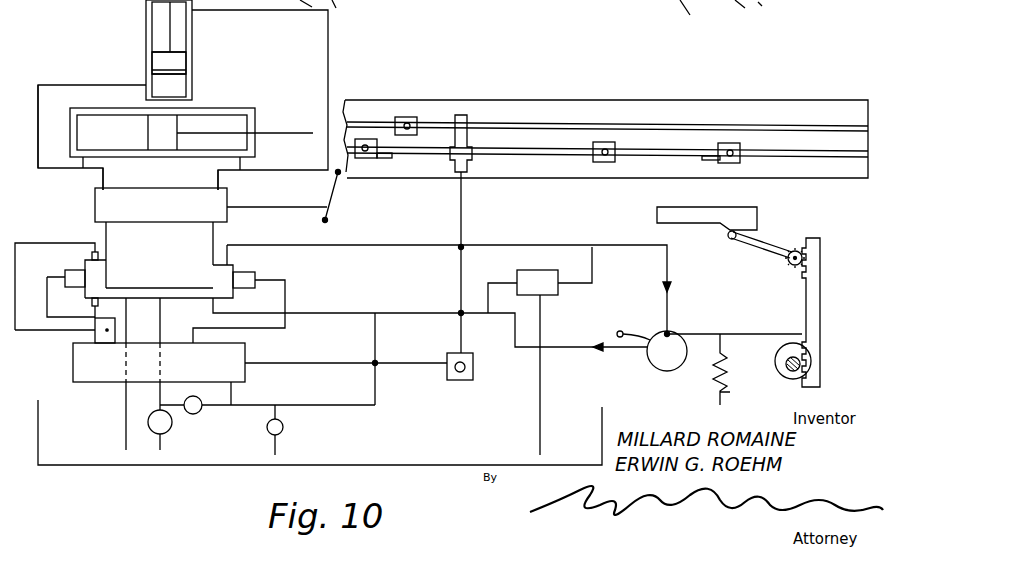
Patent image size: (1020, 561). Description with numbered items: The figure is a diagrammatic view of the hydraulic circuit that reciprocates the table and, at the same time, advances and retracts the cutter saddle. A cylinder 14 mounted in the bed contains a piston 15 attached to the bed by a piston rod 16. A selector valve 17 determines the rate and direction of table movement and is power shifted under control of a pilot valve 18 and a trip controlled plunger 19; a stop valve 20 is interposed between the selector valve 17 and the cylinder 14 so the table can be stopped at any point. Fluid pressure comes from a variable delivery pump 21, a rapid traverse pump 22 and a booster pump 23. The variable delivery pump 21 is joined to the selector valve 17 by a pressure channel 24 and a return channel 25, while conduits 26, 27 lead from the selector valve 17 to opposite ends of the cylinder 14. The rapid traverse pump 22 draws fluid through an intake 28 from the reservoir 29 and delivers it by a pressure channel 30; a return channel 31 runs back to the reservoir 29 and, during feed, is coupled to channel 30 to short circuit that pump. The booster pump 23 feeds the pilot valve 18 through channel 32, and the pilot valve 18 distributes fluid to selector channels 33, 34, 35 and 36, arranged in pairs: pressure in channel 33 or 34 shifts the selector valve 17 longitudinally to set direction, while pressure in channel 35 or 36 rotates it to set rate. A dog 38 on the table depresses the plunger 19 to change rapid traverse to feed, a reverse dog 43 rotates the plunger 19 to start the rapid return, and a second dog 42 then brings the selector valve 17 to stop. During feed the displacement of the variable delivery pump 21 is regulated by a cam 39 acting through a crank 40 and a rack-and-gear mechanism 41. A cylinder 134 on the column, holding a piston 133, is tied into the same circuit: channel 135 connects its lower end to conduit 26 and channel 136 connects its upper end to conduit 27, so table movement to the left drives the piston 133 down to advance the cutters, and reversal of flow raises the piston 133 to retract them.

The cylinder 14 is at (222, 113).
The piston 15 is at (167, 127).
The piston rod 16 is at (270, 133).
The selector valve 17 is at (168, 278).
The pilot valve 18 is at (112, 375).
The trip controlled plunger 19 is at (463, 206).
The stop valve 20 is at (95, 205).
The variable delivery pump 21 is at (650, 362).
The rapid traverse pump 22 is at (168, 425).
The booster pump 23 is at (203, 409).
The pressure channel 24 is at (428, 316).
The return channel 25 is at (425, 226).
The conduit 26 is at (103, 180).
The conduit 27 is at (218, 183).
The intake 28 is at (160, 445).
The reservoir 29 is at (95, 466).
The pressure channel 30 is at (160, 325).
The return channel 31 is at (126, 314).
The channel 32 is at (232, 402).
The selector channel 33 is at (278, 328).
The selector channel 34 is at (47, 298).
The selector channel 35 is at (45, 330).
The selector channel 36 is at (73, 342).
The dog 38 is at (407, 115).
The cam 39 is at (752, 209).
The crank 40 is at (766, 244).
The rack-and-gear mechanism 41 is at (787, 270).
The second dog 42 is at (362, 139).
The reverse dog 43 is at (728, 143).
The piston 133 is at (180, 63).
The cylinder 134 is at (146, 25).
The channel 135 is at (50, 85).
The channel 136 is at (328, 40).